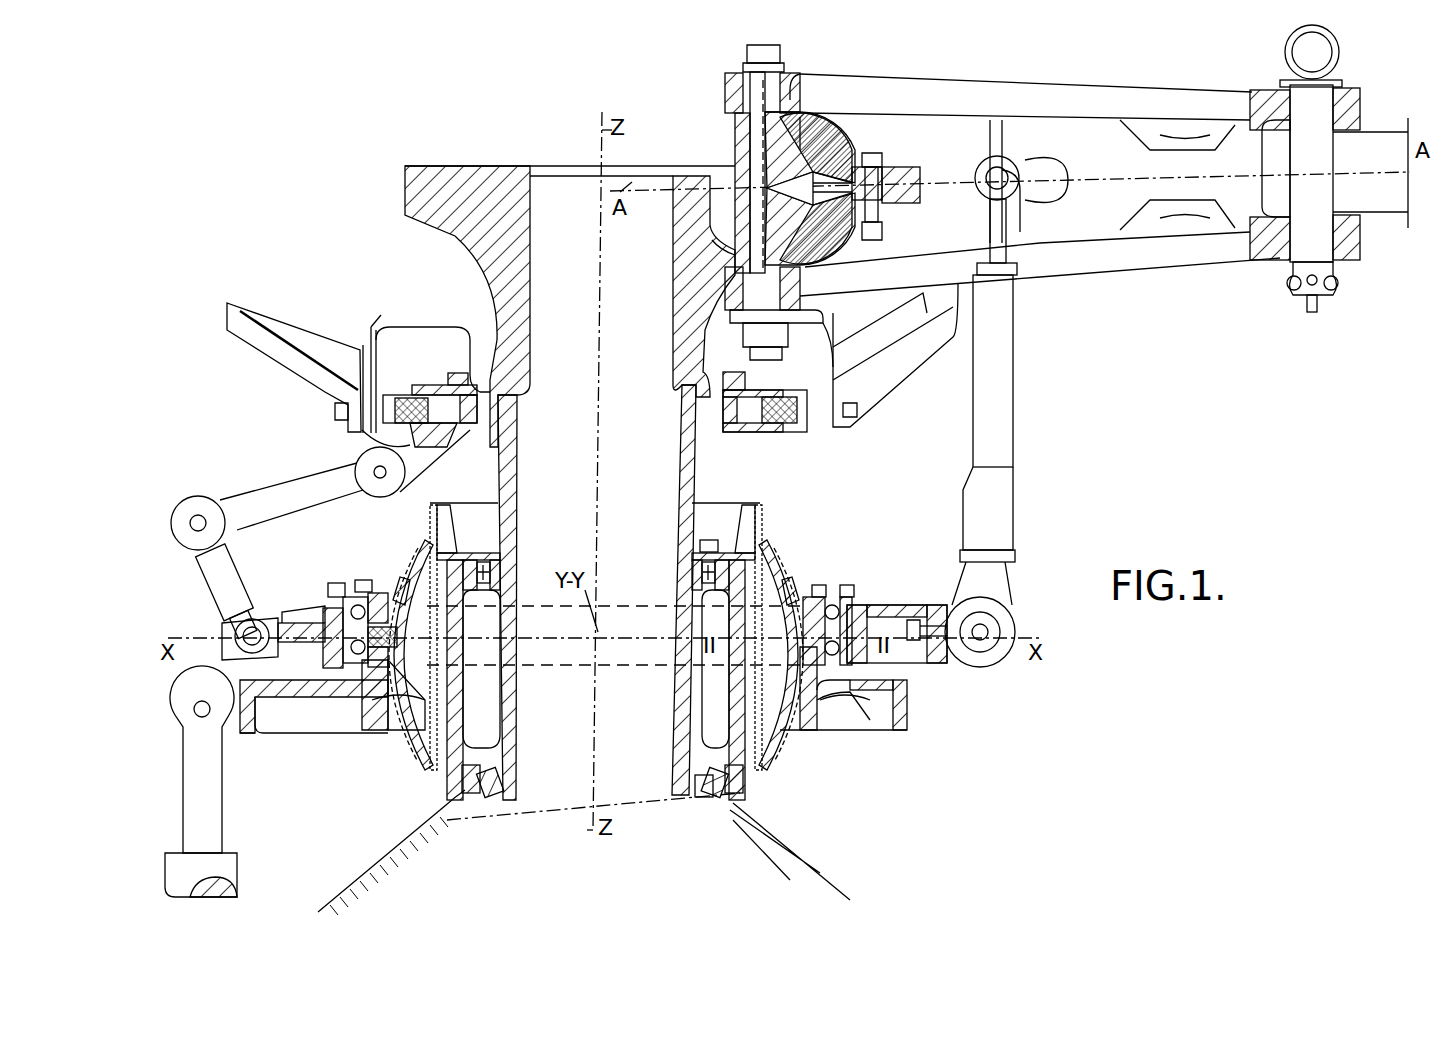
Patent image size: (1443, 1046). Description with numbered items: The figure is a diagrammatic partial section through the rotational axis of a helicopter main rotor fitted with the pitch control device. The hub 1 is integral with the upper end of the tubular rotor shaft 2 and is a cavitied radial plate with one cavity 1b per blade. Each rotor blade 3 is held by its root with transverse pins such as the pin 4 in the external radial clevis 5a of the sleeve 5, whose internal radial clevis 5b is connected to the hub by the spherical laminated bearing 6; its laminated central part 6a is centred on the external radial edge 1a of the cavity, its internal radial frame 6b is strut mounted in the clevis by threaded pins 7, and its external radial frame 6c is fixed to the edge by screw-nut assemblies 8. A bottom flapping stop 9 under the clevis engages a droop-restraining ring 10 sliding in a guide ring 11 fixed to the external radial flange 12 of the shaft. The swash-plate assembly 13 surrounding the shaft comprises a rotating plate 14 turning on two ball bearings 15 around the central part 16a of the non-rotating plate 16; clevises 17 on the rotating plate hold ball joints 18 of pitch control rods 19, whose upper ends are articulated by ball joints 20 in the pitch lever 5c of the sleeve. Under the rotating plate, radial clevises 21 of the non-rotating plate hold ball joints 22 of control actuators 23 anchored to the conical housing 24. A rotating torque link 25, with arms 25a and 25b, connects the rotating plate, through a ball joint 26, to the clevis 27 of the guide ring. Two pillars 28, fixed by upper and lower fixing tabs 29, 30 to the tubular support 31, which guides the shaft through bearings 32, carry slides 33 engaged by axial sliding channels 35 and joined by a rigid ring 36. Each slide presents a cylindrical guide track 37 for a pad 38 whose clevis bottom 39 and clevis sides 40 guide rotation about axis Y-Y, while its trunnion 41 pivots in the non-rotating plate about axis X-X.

The hub 1 is at (478, 163).
The external radial edge 1a is at (905, 172).
The cavity 1b is at (722, 242).
The tubular rotor shaft 2 is at (510, 445).
The rotor blade 3 is at (1275, 155).
The transverse pin 4 is at (1305, 215).
The sleeve 5 is at (1033, 85).
The external radial clevis 5a is at (1347, 108).
The internal radial clevis 5b is at (872, 94).
The pitch lever 5c is at (1045, 180).
The spherical laminated bearing 6 is at (858, 125).
The laminated central part 6a is at (815, 135).
The internal radial frame 6b is at (782, 130).
The external radial frame 6c is at (858, 155).
The threaded pin 7 is at (760, 157).
The screw-nut assembly 8 is at (878, 192).
The bottom flapping stop 9 is at (877, 393).
The droop-restraining ring 10 is at (765, 432).
The guide ring 11 is at (730, 432).
The external radial flange 12 is at (458, 375).
The swash-plate assembly 13 is at (800, 552).
The rotating plate 14 is at (935, 668).
The ball bearing 15 is at (845, 600).
The non-rotating plate 16 is at (905, 733).
The central part 16a is at (825, 715).
The external radial clevis 17 is at (937, 616).
The ball joint 18 is at (988, 628).
The pitch control rod 19 is at (990, 398).
The ball joint 20 is at (1001, 200).
The radial external clevis 21 is at (235, 722).
The ball joint 22 is at (193, 707).
The control actuator 23 is at (218, 862).
The conical housing 24 is at (385, 880).
The rotating torque link 25 is at (293, 470).
The torque link arm 25a is at (215, 575).
The torque link arm 25b is at (245, 505).
The ball joint 26 is at (258, 622).
The clevis 27 is at (395, 445).
The pillar 28 is at (437, 515).
The upper fixing tab 29 is at (445, 557).
The lower fixing tab 30 is at (442, 808).
The tubular support 31 is at (455, 700).
The bearing 32 is at (700, 560).
The slide 33 is at (795, 550).
The axial sliding channel 35 is at (425, 552).
The rigid ring 36 is at (657, 668).
The guide track 37 is at (405, 575).
The pad 38 is at (797, 578).
The clevis bottom 39 is at (370, 590).
The clevis side 40 is at (698, 600).
The cylindrical trunnion 41 is at (362, 705).